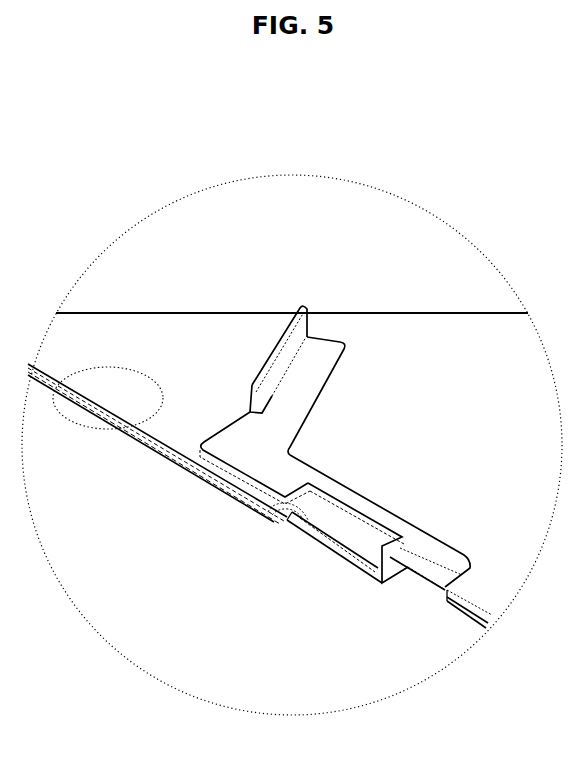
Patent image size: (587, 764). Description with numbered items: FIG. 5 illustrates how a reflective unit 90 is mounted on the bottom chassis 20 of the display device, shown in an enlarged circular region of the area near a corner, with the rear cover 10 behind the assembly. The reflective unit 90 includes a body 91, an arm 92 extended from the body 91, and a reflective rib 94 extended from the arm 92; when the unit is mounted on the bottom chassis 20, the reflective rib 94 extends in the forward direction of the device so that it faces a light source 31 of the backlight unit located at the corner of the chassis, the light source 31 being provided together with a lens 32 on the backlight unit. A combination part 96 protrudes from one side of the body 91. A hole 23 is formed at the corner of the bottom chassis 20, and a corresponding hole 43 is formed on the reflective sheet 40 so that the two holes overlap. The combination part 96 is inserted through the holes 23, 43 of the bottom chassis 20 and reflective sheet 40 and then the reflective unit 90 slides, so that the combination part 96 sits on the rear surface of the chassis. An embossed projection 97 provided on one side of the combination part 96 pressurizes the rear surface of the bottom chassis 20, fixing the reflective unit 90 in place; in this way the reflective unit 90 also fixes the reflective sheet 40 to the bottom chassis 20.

The rear cover 10 is at (330, 208).
The bottom chassis 20 is at (260, 512).
The hole 23 is at (437, 623).
The light source 31 is at (92, 412).
The lens 32 is at (123, 383).
The reflective sheet 40 is at (202, 332).
The hole 43 is at (430, 592).
The reflective unit 90 is at (345, 444).
The body 91 is at (436, 549).
The arm 92 is at (313, 368).
The reflective rib 94 is at (288, 323).
The combination part 96 is at (355, 567).
The projection 97 is at (297, 527).